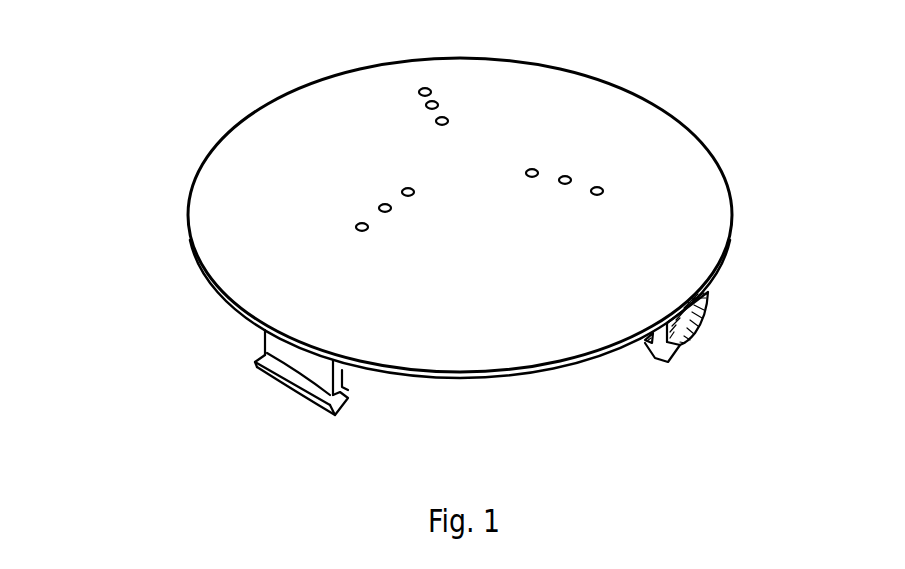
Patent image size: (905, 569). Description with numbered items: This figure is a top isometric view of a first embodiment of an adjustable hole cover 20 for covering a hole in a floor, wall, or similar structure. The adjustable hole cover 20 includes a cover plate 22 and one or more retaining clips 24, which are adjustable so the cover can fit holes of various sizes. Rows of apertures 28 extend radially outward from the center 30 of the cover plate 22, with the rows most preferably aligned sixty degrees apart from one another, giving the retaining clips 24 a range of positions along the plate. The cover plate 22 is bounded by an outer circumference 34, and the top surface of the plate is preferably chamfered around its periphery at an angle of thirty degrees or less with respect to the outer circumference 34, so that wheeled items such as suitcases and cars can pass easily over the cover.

The adjustable hole cover 20 is at (174, 104).
The cover plate 22 is at (688, 153).
The retaining clip 24 is at (337, 370).
The aperture 28 is at (568, 175).
The center 30 is at (467, 162).
The outer circumference 34 is at (547, 385).